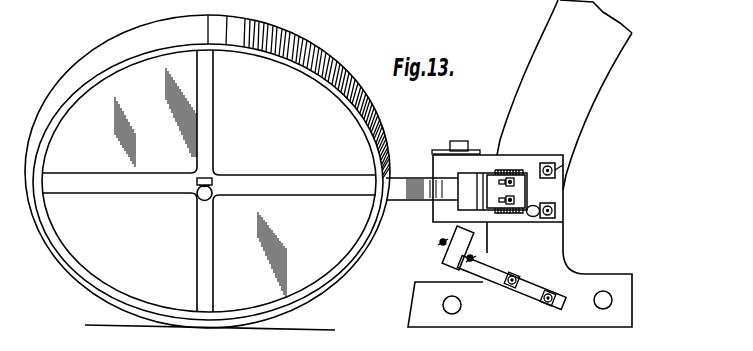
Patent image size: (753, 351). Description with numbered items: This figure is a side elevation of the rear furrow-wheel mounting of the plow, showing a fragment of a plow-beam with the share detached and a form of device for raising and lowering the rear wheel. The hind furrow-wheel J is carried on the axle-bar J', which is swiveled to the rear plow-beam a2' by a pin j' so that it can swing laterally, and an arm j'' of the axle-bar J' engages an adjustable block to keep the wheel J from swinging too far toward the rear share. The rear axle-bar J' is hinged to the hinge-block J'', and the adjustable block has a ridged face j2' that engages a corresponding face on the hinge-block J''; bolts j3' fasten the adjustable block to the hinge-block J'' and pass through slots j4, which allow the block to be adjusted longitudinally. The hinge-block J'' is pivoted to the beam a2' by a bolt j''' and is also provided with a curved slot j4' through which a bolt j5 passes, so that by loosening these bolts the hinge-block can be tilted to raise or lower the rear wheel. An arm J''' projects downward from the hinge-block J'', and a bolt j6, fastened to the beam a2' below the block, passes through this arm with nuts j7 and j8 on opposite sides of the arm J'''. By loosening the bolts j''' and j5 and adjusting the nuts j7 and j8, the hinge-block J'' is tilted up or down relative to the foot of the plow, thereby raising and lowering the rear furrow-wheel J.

The hind furrow-wheel J is at (207, 171).
The axle-bar J' is at (421, 189).
The rear plow-beam a2' is at (559, 126).
The arm J''' is at (513, 241).
The pin j' is at (456, 133).
The arm of the axle-bar j'' is at (461, 202).
The hinge-block J'' is at (513, 169).
The slots j4 is at (509, 178).
The ridged face j2' is at (543, 190).
The bolt j''' is at (579, 154).
The bolts j3' is at (559, 183).
The curved slot j4' is at (592, 189).
The bolt j5 is at (556, 216).
The bolt j6 is at (474, 276).
The nut j7 is at (465, 265).
The nut j8 is at (442, 245).